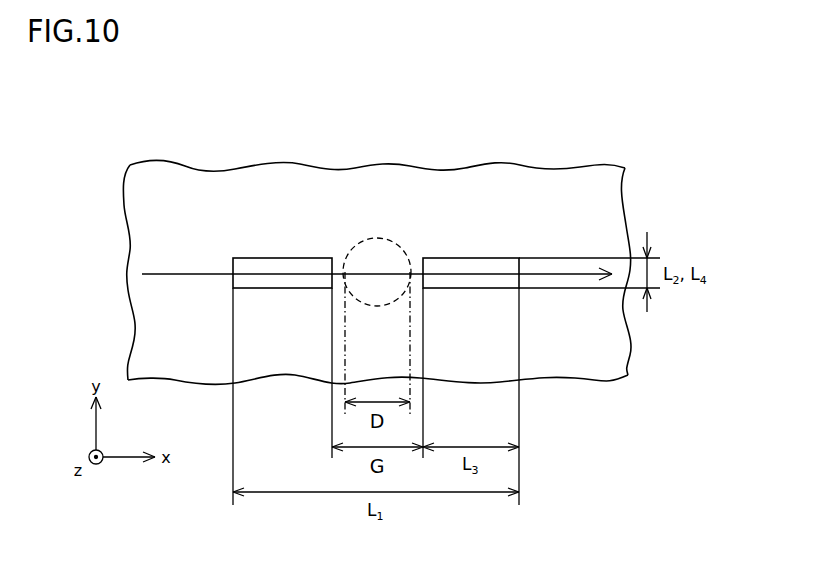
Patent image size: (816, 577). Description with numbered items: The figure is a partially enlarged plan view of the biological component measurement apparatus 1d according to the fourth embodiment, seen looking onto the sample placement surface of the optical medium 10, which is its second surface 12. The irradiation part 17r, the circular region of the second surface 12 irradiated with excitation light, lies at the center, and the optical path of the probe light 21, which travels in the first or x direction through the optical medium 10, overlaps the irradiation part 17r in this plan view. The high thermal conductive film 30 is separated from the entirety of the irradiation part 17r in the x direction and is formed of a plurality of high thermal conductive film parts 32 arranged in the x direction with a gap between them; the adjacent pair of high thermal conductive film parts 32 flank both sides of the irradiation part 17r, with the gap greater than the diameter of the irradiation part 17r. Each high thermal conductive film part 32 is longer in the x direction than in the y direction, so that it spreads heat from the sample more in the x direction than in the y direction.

The optical medium 10 is at (168, 378).
The second surface 12 is at (600, 350).
The biological component measurement apparatus 1d is at (635, 153).
The probe light 21 is at (182, 270).
The high thermal conductive film 30 is at (376, 164).
The high thermal conductive film parts 32 is at (485, 76).
The irradiation part 17r is at (370, 240).